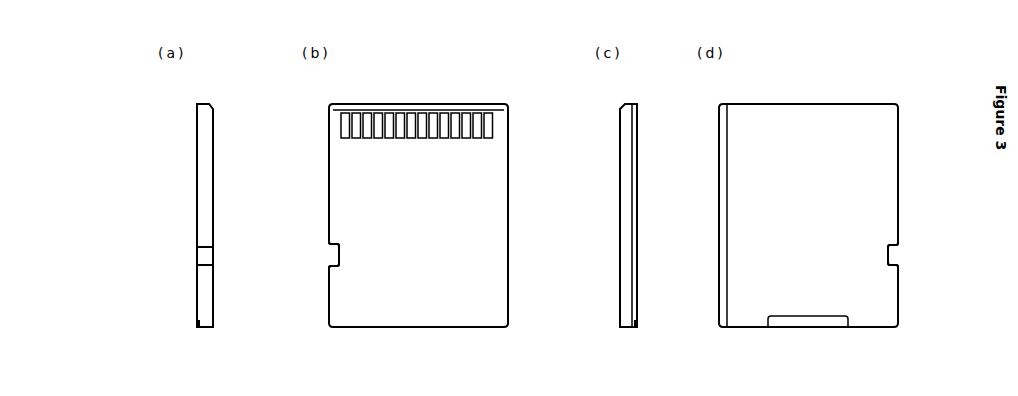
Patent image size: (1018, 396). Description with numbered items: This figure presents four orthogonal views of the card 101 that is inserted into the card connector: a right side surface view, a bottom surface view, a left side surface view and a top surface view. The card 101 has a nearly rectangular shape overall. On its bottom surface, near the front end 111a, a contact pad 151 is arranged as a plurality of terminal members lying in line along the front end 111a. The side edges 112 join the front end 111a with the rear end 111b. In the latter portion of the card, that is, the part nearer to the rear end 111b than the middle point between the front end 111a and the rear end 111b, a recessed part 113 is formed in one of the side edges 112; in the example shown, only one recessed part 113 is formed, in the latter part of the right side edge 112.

The card 101 is at (213, 150).
The front end 111a is at (224, 93).
The rear end 111b is at (205, 327).
The side edge 112 is at (213, 212).
The recessed part 113 is at (213, 257).
The contact pad 151 is at (493, 128).